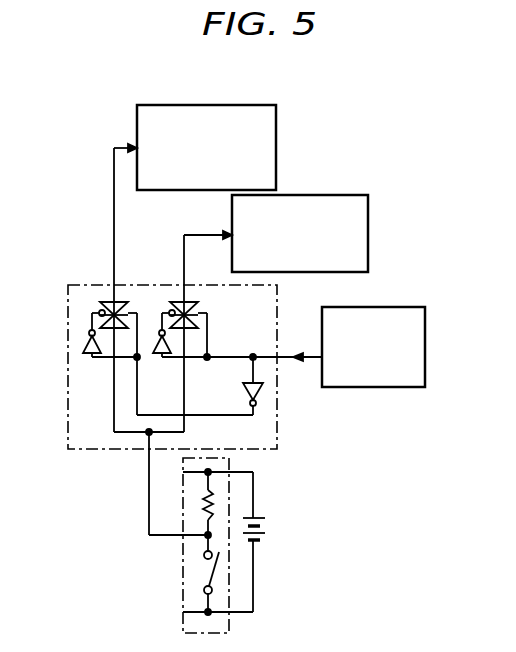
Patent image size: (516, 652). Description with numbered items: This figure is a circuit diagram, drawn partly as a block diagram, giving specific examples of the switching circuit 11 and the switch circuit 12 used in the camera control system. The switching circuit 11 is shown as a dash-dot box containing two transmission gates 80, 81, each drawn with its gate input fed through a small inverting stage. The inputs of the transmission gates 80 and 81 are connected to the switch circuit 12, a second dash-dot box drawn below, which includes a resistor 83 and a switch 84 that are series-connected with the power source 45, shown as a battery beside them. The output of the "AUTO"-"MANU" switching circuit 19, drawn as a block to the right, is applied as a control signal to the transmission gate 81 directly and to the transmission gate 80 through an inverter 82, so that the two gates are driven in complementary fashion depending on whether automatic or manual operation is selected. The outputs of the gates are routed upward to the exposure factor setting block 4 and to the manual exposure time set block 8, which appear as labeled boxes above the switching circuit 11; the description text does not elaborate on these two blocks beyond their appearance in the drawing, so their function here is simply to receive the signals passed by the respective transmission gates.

The exposure factor setting circuit 4 is at (276, 122).
The manual exposure time setting circuit 8 is at (368, 255).
The switching circuit 11 is at (68, 308).
The switch circuit 12 is at (185, 462).
The "AUTO"-"MANU" switching circuit 19 is at (420, 323).
The power source 45 is at (265, 528).
The transmission gate 80 is at (121, 301).
The transmission gate 81 is at (190, 301).
The inverter 82 is at (238, 394).
The resistor 83 is at (203, 506).
The switch 84 is at (209, 572).